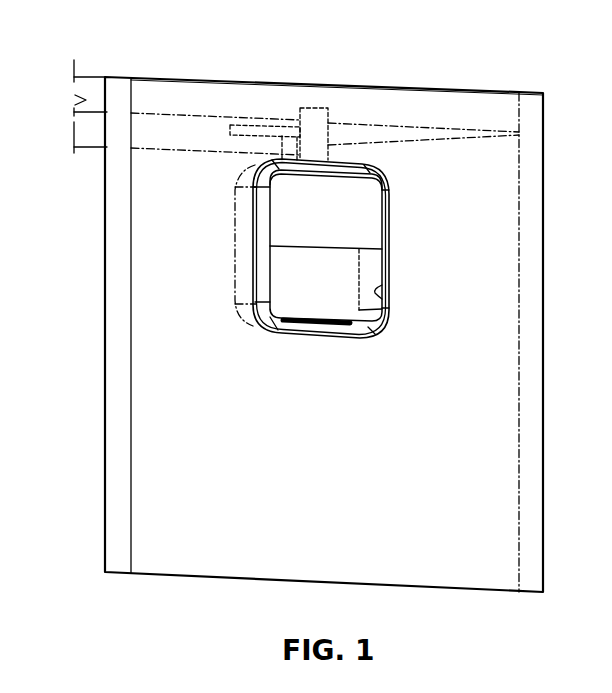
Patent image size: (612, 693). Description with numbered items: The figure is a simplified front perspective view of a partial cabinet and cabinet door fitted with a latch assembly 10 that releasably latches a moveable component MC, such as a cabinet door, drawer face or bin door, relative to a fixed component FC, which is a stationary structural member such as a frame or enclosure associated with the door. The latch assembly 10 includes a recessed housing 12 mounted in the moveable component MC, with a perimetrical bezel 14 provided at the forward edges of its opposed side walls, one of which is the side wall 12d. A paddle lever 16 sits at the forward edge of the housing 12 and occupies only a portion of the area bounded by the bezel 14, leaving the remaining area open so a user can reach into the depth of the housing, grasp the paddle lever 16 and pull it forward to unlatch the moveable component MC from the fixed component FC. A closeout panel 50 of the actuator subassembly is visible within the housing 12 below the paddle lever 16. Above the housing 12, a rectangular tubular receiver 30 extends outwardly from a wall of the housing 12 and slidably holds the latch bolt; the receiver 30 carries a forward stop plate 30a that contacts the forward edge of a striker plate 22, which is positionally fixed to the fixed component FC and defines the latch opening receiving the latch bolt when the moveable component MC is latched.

The latch assembly 10 is at (312, 280).
The recessed housing 12 is at (312, 250).
The side wall 12d is at (386, 299).
The perimetrical bezel 14 is at (389, 264).
The paddle lever 16 is at (345, 228).
The closeout panel 50 is at (335, 301).
The striker plate 22 is at (250, 126).
The rectangular tubular receiver 30 is at (281, 151).
The forward stop plate 30a is at (332, 120).
The fixed component FC is at (90, 140).
The moveable component MC is at (363, 491).